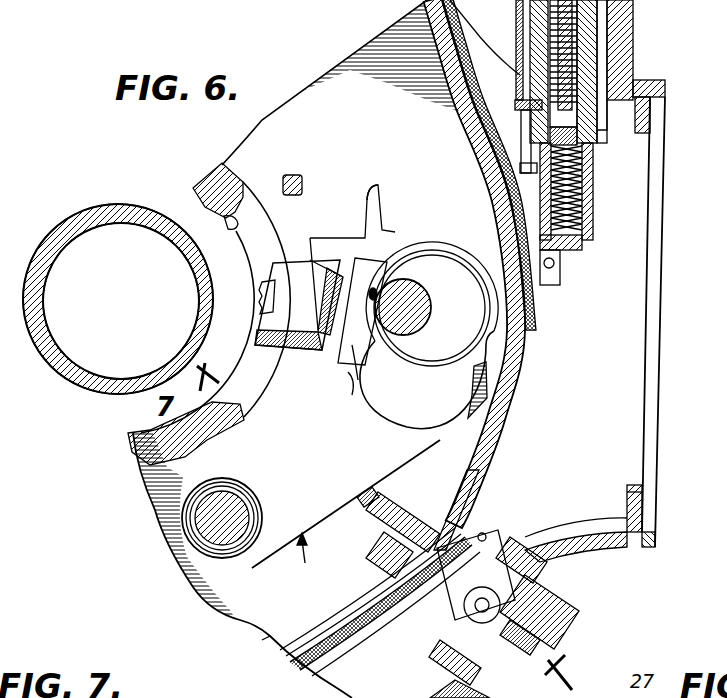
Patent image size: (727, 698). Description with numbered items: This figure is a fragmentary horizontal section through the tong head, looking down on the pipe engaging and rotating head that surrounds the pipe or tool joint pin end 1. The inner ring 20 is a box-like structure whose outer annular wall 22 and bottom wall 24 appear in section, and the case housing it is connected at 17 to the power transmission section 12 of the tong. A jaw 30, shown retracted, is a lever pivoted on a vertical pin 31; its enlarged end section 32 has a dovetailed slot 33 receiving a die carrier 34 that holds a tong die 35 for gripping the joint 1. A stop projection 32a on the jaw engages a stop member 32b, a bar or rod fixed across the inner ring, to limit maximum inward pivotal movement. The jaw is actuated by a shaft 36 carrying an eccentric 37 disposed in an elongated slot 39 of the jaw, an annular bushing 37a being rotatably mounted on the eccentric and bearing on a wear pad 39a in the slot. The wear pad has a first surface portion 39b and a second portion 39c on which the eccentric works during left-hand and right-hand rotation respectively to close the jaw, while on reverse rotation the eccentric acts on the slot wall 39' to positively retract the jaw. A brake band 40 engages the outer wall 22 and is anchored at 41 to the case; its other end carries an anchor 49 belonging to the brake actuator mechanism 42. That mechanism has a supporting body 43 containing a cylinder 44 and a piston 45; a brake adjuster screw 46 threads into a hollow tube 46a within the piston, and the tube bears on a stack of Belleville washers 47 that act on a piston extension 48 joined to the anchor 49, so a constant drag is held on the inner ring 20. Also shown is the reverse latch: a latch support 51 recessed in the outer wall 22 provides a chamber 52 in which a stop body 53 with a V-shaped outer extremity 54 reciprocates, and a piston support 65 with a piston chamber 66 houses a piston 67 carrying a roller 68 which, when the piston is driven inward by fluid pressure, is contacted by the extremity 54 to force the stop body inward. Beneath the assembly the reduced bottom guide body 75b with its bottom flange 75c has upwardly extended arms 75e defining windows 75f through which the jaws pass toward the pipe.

The tool joint pin end 1 is at (120, 212).
The power transmission section 12 is at (655, 542).
The case connection 17 is at (628, 552).
The inner ring assembly 20 is at (505, 440).
The outer annular wall 22 is at (512, 392).
The bottom wall 24 is at (336, 606).
The jaw 30 is at (309, 556).
The pivot pin 31 is at (222, 546).
The enlarged end section 32 is at (438, 238).
The stop projection 32a is at (372, 198).
The stop member 32b is at (294, 175).
The dovetailed slot 33 is at (342, 273).
The die carrier 34 is at (300, 372).
The tong die 35 is at (262, 294).
The eccentric supporting shaft 36 is at (424, 296).
The eccentric 37 is at (474, 324).
The bushing 37a is at (455, 262).
The elongated slot 39 is at (427, 389).
The wear pad 39a is at (360, 355).
The first cam surface portion 39b is at (372, 300).
The second cam surface portion 39c is at (356, 394).
The slot wall 39' is at (451, 390).
The brake band 40 is at (312, 672).
The brake band anchor 41 is at (492, 535).
The brake actuator mechanism 42 is at (637, 68).
The supporting body 43 is at (618, 55).
The cylinder 44 is at (596, 168).
The piston 45 is at (578, 110).
The brake adjuster screw 46 is at (585, 90).
The hollow tube 46a is at (582, 122).
The Belleville washers 47 is at (582, 210).
The piston extension 48 is at (582, 245).
The brake band anchor 49 is at (551, 270).
The latch support 51 is at (364, 520).
The chamber 52 is at (393, 505).
The stop body 53 is at (404, 560).
The V-shaped outer extremity 54 is at (420, 612).
The piston support 65 is at (550, 578).
The piston chamber 66 is at (548, 628).
The piston 67 is at (556, 606).
The roller 68 is at (450, 660).
The reduced bottom guide body 75b is at (262, 245).
The bottom flange 75c is at (148, 447).
The upwardly extended arms 75e is at (228, 180).
The windows 75f is at (234, 229).